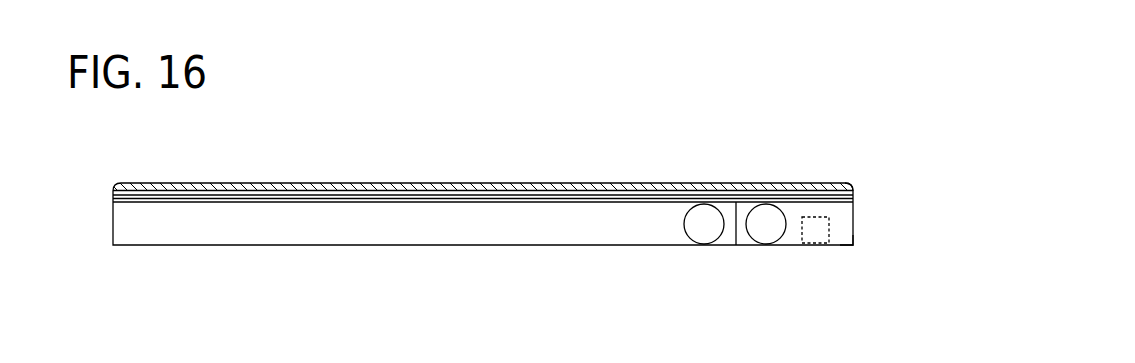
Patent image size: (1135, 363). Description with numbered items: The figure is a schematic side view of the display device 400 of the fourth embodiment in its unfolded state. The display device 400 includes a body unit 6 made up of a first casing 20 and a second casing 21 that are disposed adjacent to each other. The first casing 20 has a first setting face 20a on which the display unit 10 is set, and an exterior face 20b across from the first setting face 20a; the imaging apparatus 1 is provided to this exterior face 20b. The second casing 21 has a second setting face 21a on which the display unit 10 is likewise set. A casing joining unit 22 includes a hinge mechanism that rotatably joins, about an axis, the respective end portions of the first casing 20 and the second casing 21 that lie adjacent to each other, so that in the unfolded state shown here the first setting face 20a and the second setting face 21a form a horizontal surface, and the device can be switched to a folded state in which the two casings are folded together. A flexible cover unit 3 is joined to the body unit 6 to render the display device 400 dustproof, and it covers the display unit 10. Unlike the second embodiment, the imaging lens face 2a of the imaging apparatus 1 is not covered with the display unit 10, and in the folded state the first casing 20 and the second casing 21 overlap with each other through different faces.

The display device 400 is at (877, 148).
The display unit 10 is at (113, 192).
The cover unit 3 is at (465, 185).
The casing joining unit 22 is at (730, 191).
The imaging apparatus 1 is at (812, 223).
The first casing 20 is at (780, 245).
The second casing 21 is at (683, 245).
The second setting face 21a is at (530, 243).
The first setting face 20a is at (830, 204).
The exterior face 20b is at (832, 245).
The imaging lens face 2a is at (815, 253).
The body unit 6 is at (798, 333).